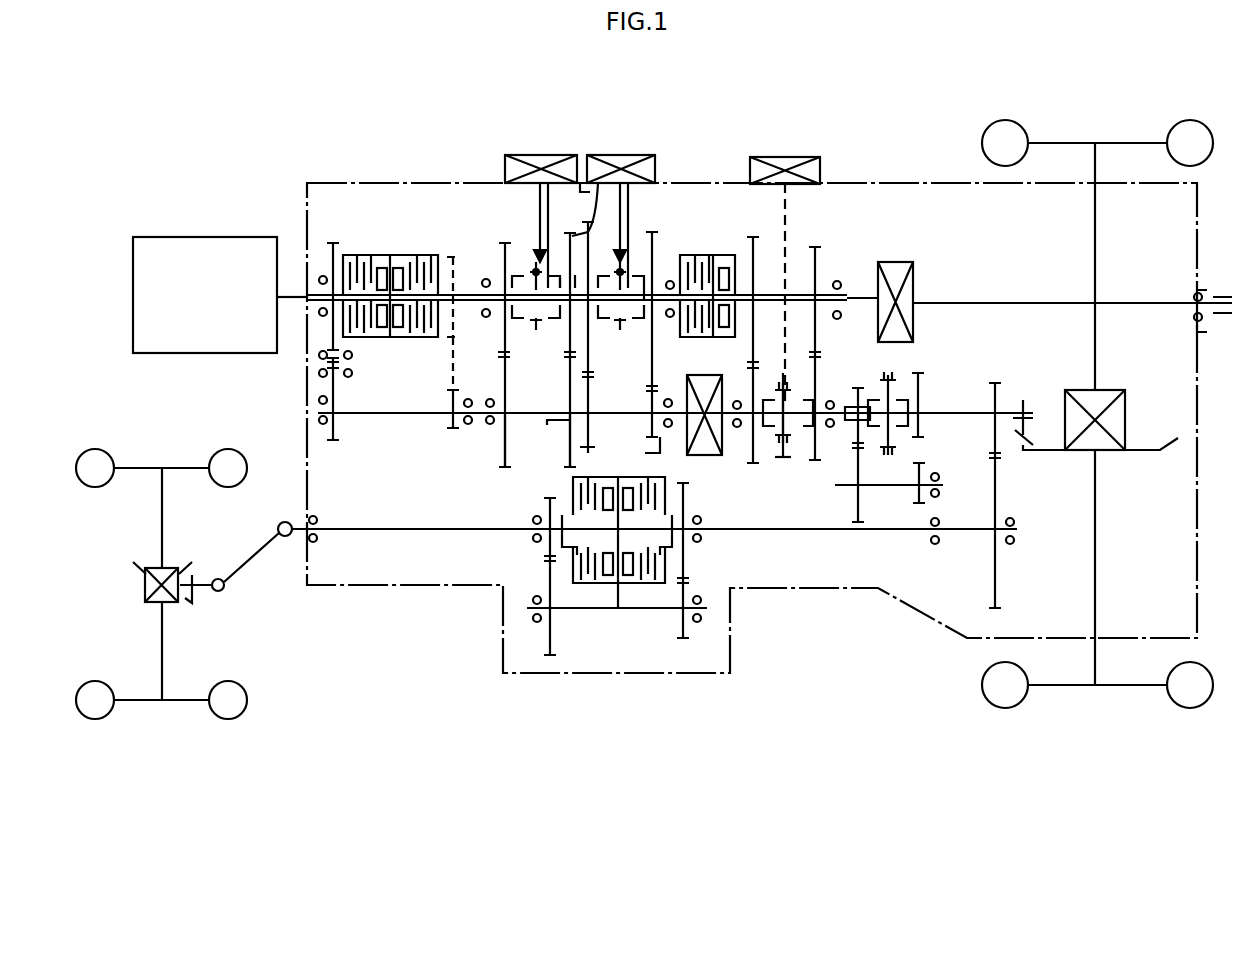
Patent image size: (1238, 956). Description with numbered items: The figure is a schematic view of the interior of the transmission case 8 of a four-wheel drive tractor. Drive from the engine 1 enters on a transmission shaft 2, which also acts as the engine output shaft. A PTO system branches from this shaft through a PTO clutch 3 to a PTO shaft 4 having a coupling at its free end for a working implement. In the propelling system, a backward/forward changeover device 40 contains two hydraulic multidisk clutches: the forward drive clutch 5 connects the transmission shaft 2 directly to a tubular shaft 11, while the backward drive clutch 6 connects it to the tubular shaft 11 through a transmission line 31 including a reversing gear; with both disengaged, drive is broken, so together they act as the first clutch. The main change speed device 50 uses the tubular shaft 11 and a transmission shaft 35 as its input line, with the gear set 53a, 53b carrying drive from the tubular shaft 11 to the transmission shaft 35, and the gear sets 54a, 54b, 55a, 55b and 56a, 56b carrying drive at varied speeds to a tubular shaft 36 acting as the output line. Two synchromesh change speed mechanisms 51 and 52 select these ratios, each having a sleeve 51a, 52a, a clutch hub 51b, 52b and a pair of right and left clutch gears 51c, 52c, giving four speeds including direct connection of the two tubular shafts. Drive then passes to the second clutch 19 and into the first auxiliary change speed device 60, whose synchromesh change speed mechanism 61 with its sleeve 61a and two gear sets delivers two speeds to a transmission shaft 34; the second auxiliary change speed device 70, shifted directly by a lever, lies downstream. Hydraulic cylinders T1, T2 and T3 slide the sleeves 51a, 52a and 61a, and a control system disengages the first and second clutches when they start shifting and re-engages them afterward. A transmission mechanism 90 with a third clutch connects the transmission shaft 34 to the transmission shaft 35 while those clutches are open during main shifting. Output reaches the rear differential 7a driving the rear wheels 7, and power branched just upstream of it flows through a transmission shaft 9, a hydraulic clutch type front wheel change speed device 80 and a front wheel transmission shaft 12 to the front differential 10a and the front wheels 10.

The engine 1 is at (200, 237).
The transmission shaft 2 is at (860, 297).
The PTO clutch 3 is at (913, 275).
The PTO shaft 4 is at (1010, 303).
The forward drive clutch 5 is at (420, 255).
The backward drive clutch 6 is at (365, 255).
The rear wheels 7 is at (1128, 143).
The rear differential 7a is at (1118, 390).
The transmission case 8 is at (668, 676).
The transmission shaft 9 is at (882, 532).
The front wheels 10 is at (146, 468).
The front differential 10a is at (170, 602).
The tubular shaft 11 is at (675, 395).
The front wheel transmission shaft 12 is at (248, 557).
The second clutch 19 is at (722, 257).
The transmission line 31 is at (392, 413).
The transmission shaft 34 is at (743, 423).
The transmission shaft 35 is at (502, 423).
The tubular shaft 36 is at (797, 297).
The backward/forward changeover device 40 is at (390, 252).
The main change speed device 50 is at (578, 183).
The synchromesh change speed mechanism 51 is at (518, 157).
The sleeve 51a is at (537, 268).
The clutch hub 51b is at (527, 353).
The clutch gears 51c is at (560, 275).
The synchromesh change speed mechanism 52 is at (630, 265).
The sleeve 52a is at (668, 215).
The clutch hub 52b is at (652, 280).
The clutch gears 52c is at (658, 394).
The gear 53a is at (510, 268).
The gear 53b is at (507, 458).
The gear 54a is at (543, 350).
The gear 54b is at (540, 440).
The gear 55a is at (593, 155).
The gear 55b is at (542, 562).
The gear 56a is at (652, 235).
The gear 56b is at (667, 383).
The first auxiliary change speed device 60 is at (777, 478).
The synchromesh change speed mechanism 61 is at (772, 453).
The sleeve 61a is at (782, 460).
The second auxiliary change speed device 70 is at (876, 383).
The front wheel change speed device 80 is at (618, 615).
The transmission mechanism 90 is at (683, 440).
The hydraulic cylinder T1 is at (545, 155).
The hydraulic cylinder T2 is at (648, 155).
The hydraulic cylinder T3 is at (788, 157).